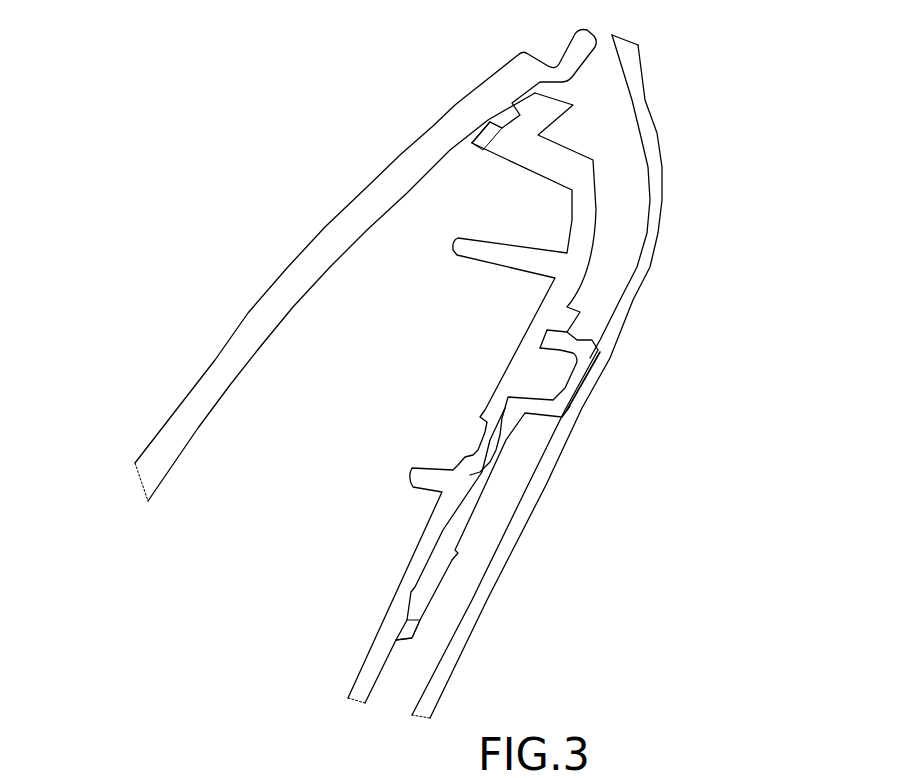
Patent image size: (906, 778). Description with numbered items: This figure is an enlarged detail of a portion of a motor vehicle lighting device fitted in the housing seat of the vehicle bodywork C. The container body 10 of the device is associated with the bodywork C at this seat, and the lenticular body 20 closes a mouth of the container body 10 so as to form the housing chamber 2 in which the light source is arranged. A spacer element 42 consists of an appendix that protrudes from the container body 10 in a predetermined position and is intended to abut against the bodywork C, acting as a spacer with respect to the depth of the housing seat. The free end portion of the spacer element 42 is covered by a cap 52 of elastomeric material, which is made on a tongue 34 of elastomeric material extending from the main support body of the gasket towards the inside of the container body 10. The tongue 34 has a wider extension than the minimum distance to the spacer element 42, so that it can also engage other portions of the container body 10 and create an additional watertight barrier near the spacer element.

The housing chamber 2 is at (405, 364).
The container body 10 is at (513, 148).
The lenticular body 20 is at (185, 422).
The tongue 34 is at (448, 540).
The spacer element 42 is at (547, 375).
The cap 52 is at (573, 379).
The bodywork C is at (523, 517).